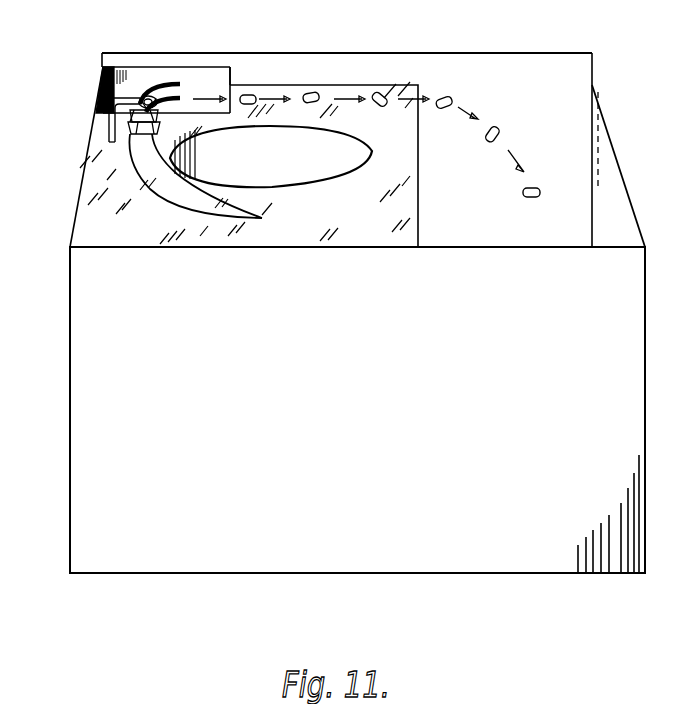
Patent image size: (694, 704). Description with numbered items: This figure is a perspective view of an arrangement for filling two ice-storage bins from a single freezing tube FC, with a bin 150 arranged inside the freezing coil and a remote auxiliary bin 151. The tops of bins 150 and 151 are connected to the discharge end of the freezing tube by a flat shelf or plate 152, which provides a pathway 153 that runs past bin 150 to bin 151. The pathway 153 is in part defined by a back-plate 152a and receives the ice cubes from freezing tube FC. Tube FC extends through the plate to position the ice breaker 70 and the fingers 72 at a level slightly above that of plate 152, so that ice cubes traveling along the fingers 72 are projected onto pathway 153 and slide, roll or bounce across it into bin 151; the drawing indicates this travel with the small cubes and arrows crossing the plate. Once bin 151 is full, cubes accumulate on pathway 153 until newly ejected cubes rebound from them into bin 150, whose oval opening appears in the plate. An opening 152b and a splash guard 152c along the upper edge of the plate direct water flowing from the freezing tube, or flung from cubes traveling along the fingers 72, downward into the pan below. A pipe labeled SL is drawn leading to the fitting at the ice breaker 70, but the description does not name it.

The splash guard 152c is at (118, 60).
The back-plate 152a is at (345, 68).
The opening 152b is at (213, 90).
The shelf or plate 152 is at (393, 146).
The ice bin 151 is at (477, 213).
The ice bin 150 is at (282, 167).
The pathway 153 is at (300, 205).
The ice breaker 70 is at (160, 113).
The fingers 72 is at (163, 85).
The supply line SL is at (110, 123).
The freezing tube FC is at (175, 191).